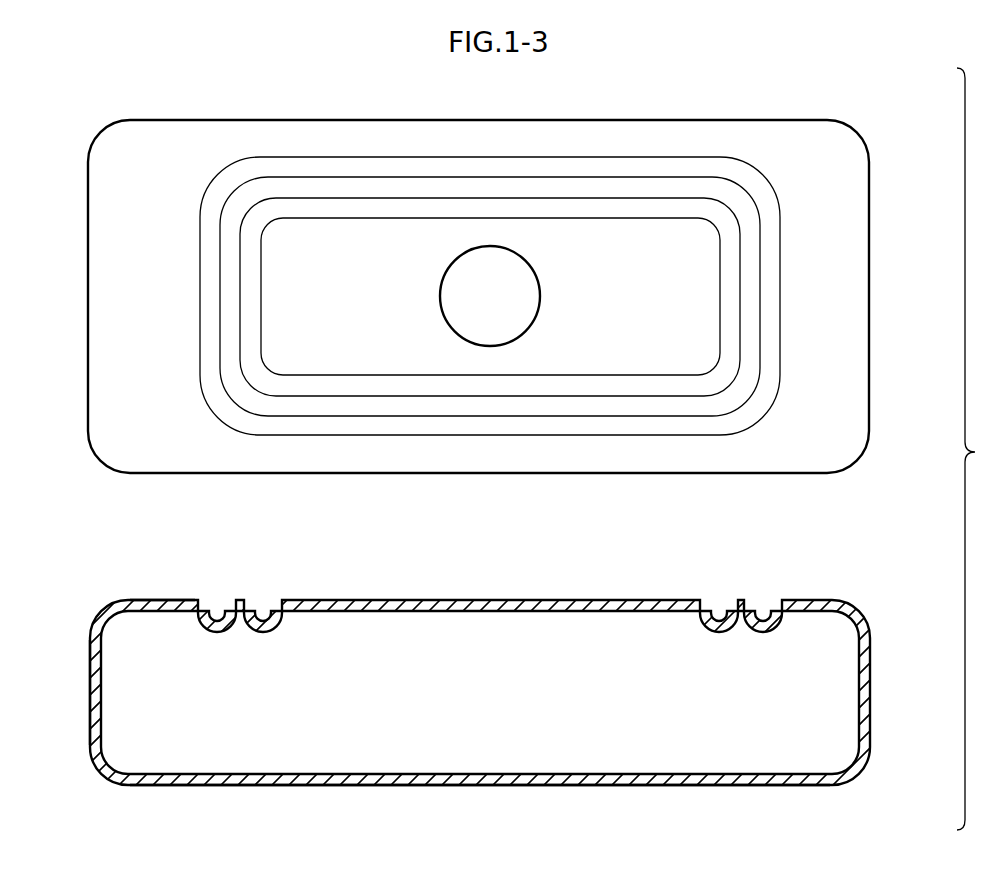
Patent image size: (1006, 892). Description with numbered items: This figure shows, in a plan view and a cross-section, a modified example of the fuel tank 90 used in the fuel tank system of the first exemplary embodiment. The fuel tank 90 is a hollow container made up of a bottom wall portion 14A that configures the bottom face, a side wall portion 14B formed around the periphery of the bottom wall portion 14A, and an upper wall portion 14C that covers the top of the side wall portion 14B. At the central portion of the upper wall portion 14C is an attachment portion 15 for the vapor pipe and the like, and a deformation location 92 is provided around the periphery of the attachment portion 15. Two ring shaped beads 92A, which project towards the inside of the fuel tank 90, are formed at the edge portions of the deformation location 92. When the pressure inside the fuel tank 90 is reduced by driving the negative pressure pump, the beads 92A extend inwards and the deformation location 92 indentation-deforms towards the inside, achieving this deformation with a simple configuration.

The fuel tank 90 is at (873, 296).
The deformation location 92 is at (673, 238).
The ring shaped beads 92A is at (768, 220).
The attachment portion 15 is at (525, 297).
The bottom wall portion 14A is at (636, 785).
The side wall portion 14B is at (95, 690).
The upper wall portion 14C is at (165, 600).